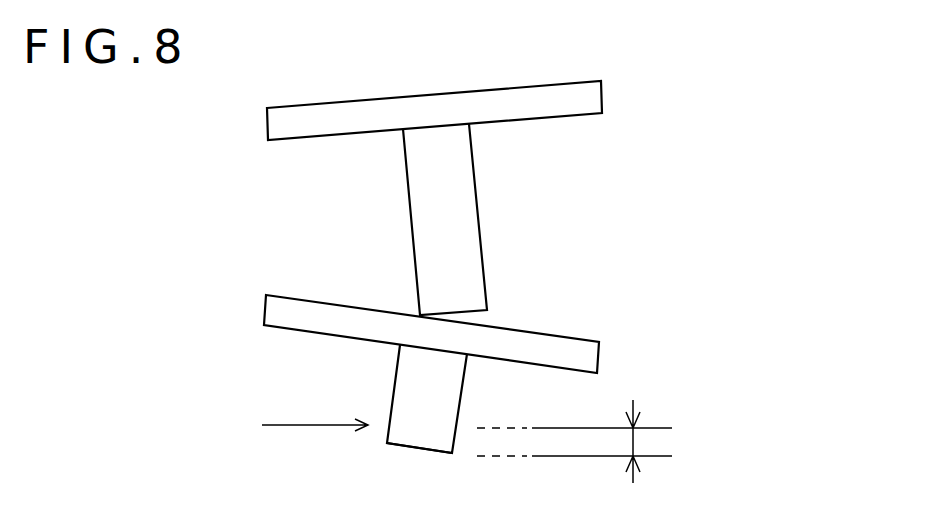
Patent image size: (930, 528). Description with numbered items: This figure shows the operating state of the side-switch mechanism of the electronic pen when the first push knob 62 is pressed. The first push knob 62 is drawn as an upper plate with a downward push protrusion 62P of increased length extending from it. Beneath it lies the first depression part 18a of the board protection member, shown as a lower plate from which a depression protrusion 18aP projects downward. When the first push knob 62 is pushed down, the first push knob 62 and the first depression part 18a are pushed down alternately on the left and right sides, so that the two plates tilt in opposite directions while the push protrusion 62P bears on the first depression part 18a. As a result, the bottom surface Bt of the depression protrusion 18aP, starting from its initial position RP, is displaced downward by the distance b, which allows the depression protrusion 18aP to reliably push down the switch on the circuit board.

The first push knob 62 is at (413, 95).
The push protrusion 62P is at (479, 212).
The first depression part 18a is at (547, 348).
The depression protrusion 18aP is at (393, 395).
The bottom surface Bt is at (420, 451).
The initial position RP is at (290, 426).
The distance b is at (635, 443).